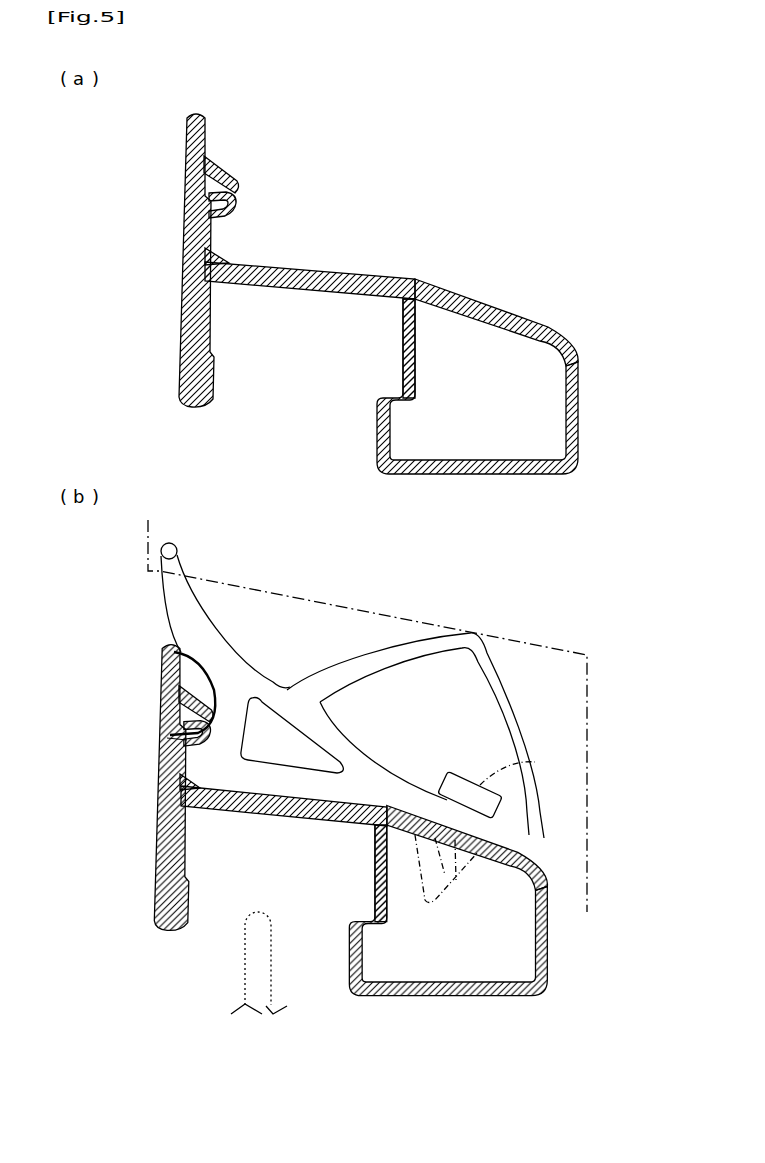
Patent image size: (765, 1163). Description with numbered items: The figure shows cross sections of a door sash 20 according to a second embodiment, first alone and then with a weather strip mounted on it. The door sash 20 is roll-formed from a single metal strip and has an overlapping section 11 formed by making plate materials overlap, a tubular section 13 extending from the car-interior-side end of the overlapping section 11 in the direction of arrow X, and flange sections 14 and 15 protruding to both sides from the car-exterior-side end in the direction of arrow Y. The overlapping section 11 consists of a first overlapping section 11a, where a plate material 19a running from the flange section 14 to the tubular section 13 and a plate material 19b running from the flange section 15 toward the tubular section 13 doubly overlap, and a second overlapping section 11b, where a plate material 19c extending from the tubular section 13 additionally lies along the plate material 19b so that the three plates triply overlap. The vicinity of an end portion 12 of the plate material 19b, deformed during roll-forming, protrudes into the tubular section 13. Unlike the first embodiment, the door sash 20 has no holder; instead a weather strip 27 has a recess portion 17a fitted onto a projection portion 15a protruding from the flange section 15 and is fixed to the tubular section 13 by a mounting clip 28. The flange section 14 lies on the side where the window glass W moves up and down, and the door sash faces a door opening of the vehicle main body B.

The overlapping section 11 is at (252, 266).
The first overlapping section 11a is at (344, 296).
The second overlapping section 11b is at (418, 278).
The end portion 12 is at (410, 314).
The tubular section 13 is at (580, 412).
The flange section 14 is at (183, 338).
The flange section 15 is at (192, 162).
The projection portion 15a is at (168, 740).
The recess portion 17a is at (190, 662).
The plate material 19a is at (235, 273).
The plate material 19b is at (303, 273).
The plate material 19c is at (446, 288).
The door sash 20 is at (503, 301).
The weather strip 27 is at (277, 679).
The mounting clip 28 is at (468, 783).
The vehicle main body B is at (527, 646).
The window glass W is at (262, 966).
The arrow X is at (130, 262).
The arrow Y is at (645, 268).